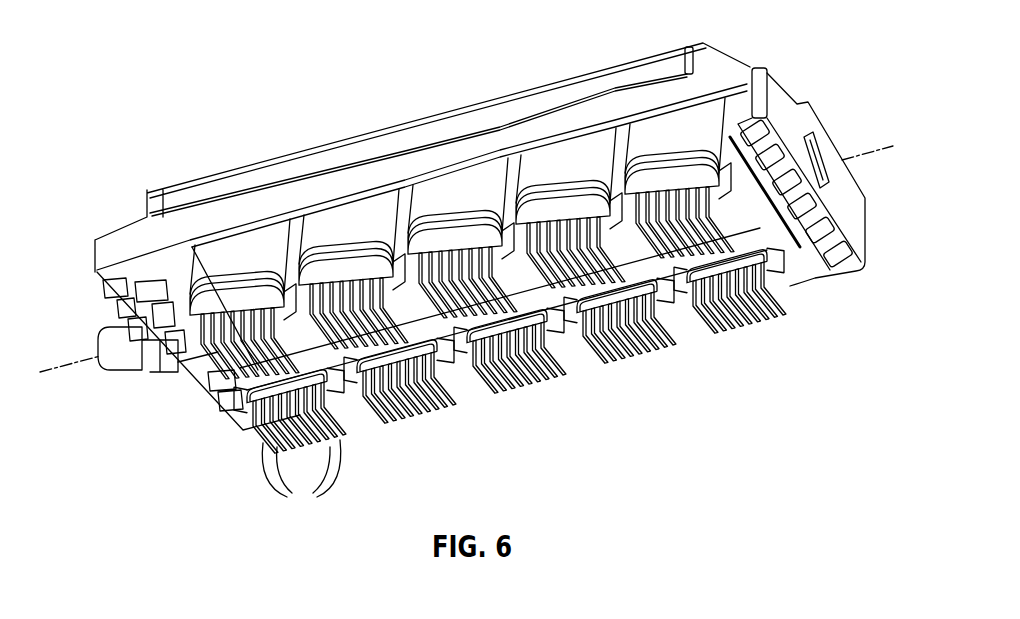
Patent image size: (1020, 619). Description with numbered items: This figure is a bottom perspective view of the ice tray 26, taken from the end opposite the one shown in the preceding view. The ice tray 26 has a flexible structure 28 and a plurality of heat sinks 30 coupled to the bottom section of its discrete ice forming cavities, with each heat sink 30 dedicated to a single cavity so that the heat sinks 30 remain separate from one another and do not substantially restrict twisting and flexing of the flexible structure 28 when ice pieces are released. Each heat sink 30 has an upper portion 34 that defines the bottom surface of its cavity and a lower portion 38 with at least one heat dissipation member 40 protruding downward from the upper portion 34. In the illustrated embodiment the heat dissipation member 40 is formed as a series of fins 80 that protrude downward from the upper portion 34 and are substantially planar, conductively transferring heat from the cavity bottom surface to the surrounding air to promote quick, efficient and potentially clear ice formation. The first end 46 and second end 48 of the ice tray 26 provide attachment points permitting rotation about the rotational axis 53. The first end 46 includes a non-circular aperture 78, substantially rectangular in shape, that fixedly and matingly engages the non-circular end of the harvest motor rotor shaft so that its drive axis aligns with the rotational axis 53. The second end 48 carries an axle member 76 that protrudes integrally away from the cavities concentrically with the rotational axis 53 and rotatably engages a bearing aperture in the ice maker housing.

The ice tray 26 is at (208, 127).
The flexible structure 28 is at (220, 263).
The heat sinks 30 is at (462, 400).
The upper portion 34 is at (550, 203).
The lower portion 38 is at (387, 425).
The heat dissipation member 40 is at (385, 290).
The first end 46 is at (827, 105).
The second end 48 is at (193, 400).
The rotational axis 53 is at (847, 157).
The axle member 76 is at (122, 353).
The non-circular aperture 78 is at (818, 165).
The series of fins 80 is at (283, 480).